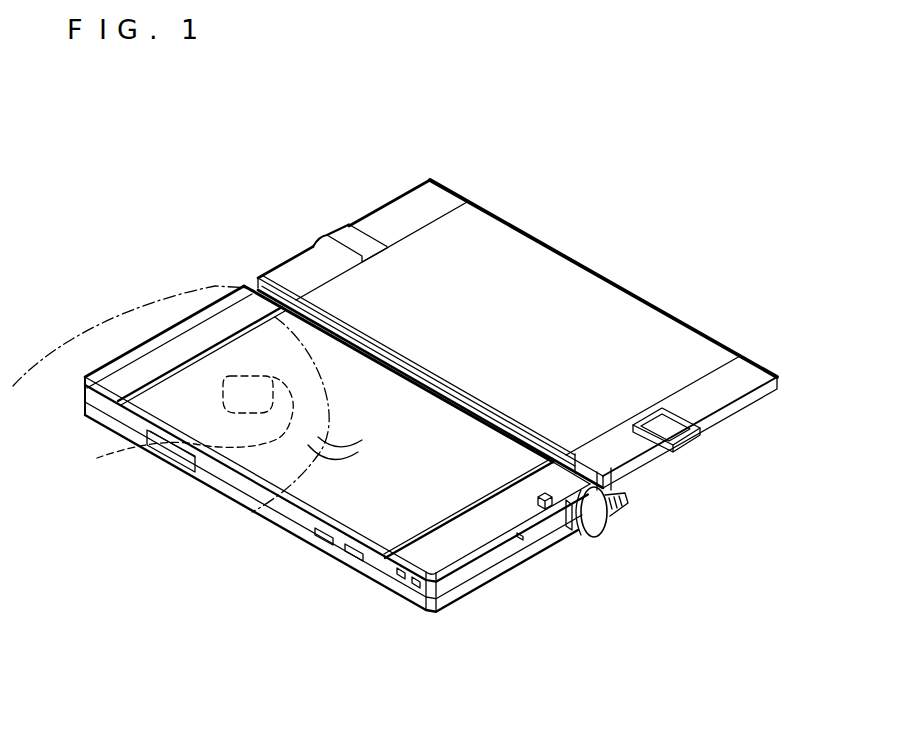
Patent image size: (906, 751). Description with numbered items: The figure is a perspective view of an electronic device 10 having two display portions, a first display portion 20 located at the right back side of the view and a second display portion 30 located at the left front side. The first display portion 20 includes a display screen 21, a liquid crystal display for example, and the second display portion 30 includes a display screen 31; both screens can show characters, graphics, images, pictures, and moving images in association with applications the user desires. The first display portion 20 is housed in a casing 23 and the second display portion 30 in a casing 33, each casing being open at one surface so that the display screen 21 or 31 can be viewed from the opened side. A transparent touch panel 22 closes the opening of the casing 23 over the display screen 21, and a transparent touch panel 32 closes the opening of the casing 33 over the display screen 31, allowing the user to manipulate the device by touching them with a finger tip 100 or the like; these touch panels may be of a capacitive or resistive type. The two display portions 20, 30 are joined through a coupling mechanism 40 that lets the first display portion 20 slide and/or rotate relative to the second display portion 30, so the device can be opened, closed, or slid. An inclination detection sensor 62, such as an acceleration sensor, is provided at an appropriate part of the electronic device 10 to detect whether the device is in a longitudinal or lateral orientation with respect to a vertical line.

The electronic device 10 is at (697, 159).
The first display portion 20 is at (432, 268).
The display screen 21 is at (690, 358).
The touch panel 22 is at (653, 377).
The casing 23 is at (683, 445).
The second display portion 30 is at (196, 396).
The display screen 31 is at (363, 573).
The touch panel 32 is at (353, 493).
The casing 33 is at (495, 570).
The coupling mechanism 40 is at (593, 518).
The inclination detection sensor 62 is at (569, 523).
The finger tip 100 is at (250, 503).